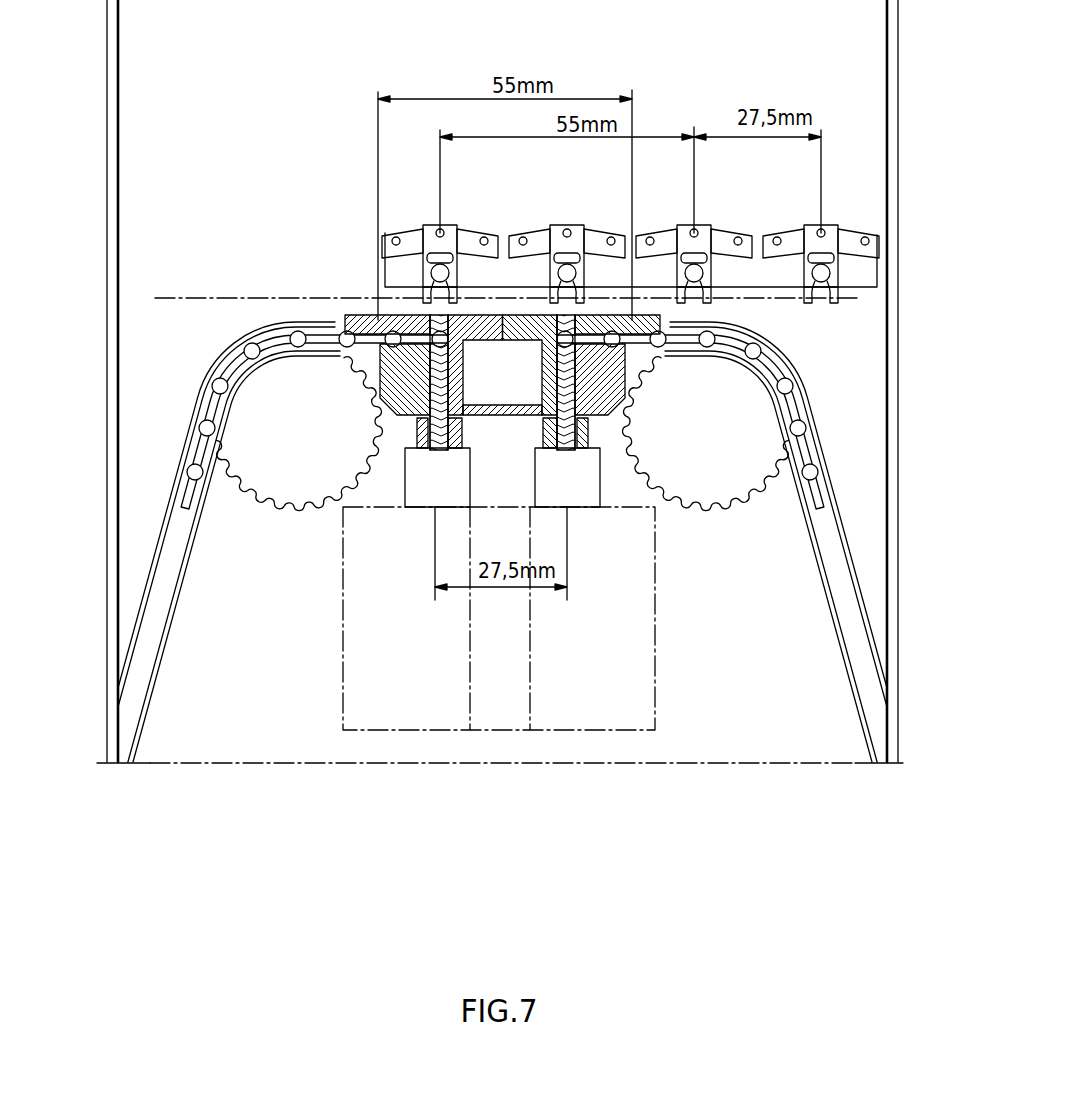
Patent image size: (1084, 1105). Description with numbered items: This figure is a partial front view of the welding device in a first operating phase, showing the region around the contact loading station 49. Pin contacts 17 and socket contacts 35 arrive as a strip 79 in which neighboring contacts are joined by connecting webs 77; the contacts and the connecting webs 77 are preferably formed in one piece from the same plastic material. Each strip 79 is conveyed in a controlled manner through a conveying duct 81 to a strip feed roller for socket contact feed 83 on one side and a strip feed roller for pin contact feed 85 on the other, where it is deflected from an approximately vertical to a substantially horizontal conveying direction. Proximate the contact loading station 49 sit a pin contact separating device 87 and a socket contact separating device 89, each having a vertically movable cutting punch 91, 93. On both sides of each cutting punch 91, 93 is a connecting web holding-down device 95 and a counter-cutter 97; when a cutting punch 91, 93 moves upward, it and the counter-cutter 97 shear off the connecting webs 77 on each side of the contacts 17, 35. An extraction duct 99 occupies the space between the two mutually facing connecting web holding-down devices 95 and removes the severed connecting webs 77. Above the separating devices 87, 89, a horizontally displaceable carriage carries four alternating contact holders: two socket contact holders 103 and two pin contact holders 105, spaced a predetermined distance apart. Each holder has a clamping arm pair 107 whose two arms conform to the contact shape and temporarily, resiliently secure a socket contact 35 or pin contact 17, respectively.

The pin contact 17 is at (800, 456).
The socket contact 35 is at (195, 465).
The contact loading station 49 is at (380, 800).
The connecting web 77 is at (201, 400).
The strip 79 is at (192, 500).
The conveying duct 81 is at (163, 553).
The strip feed roller for socket contact feed 83 is at (253, 392).
The strip feed roller for pin contact feed 85 is at (757, 412).
The pin contact separating device 87 is at (448, 410).
The socket contact separating device 89 is at (596, 430).
The cutting punch 91 is at (403, 316).
The cutting punch 93 is at (563, 448).
The connecting web holding-down device 95 is at (472, 427).
The counter-cutter 97 is at (478, 322).
The extraction duct 99 is at (488, 382).
The socket contact holder 103 is at (568, 229).
The pin contact holder 105 is at (441, 230).
The clamping arm pair 107 is at (427, 275).